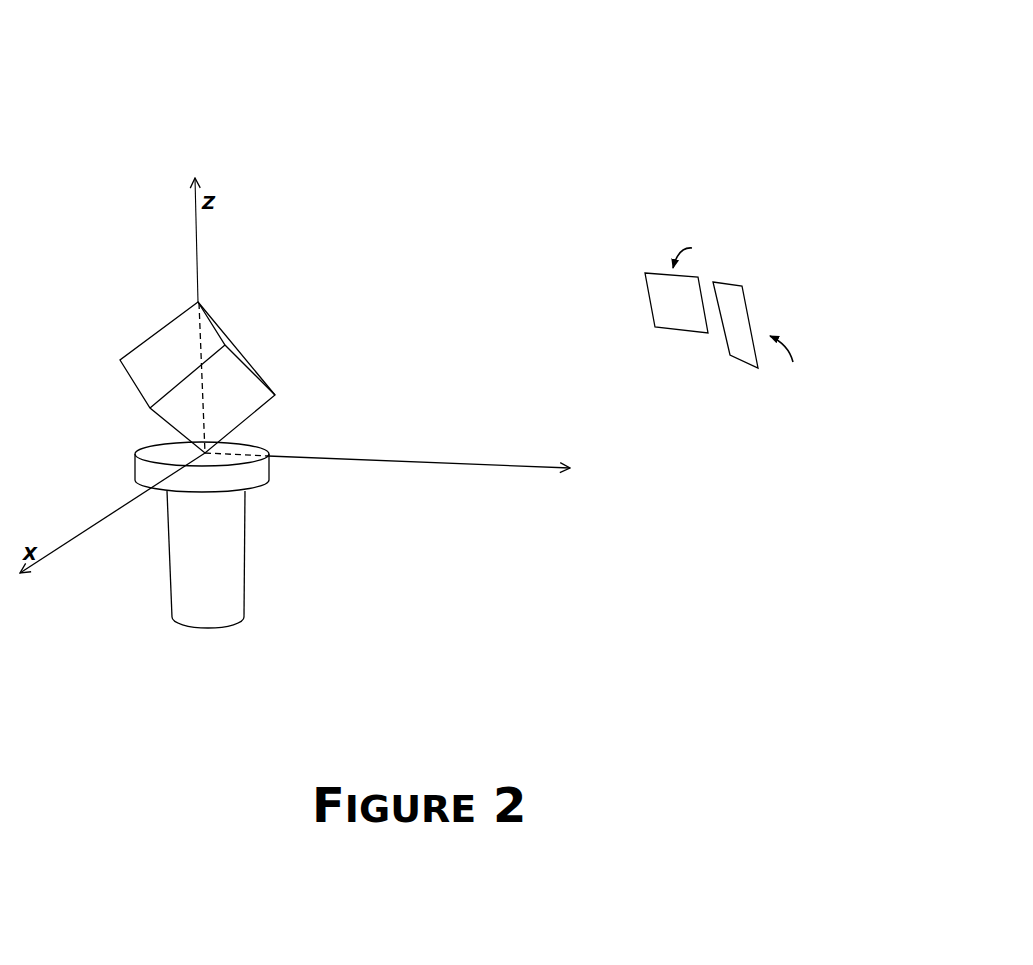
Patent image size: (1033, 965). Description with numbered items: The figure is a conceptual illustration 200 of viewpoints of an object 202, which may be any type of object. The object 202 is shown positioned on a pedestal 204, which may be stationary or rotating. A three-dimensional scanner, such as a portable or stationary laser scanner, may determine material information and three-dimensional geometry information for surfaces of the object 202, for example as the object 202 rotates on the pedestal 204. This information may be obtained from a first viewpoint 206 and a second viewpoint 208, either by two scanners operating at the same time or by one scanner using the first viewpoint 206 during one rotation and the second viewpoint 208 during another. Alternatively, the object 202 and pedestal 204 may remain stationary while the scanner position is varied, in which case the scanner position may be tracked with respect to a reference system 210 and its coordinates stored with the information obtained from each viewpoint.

The conceptual illustration 200 is at (84, 63).
The object 202 is at (138, 343).
The pedestal 204 is at (173, 593).
The first viewpoint 206 is at (680, 331).
The second viewpoint 208 is at (743, 362).
The reference system 210 is at (452, 463).